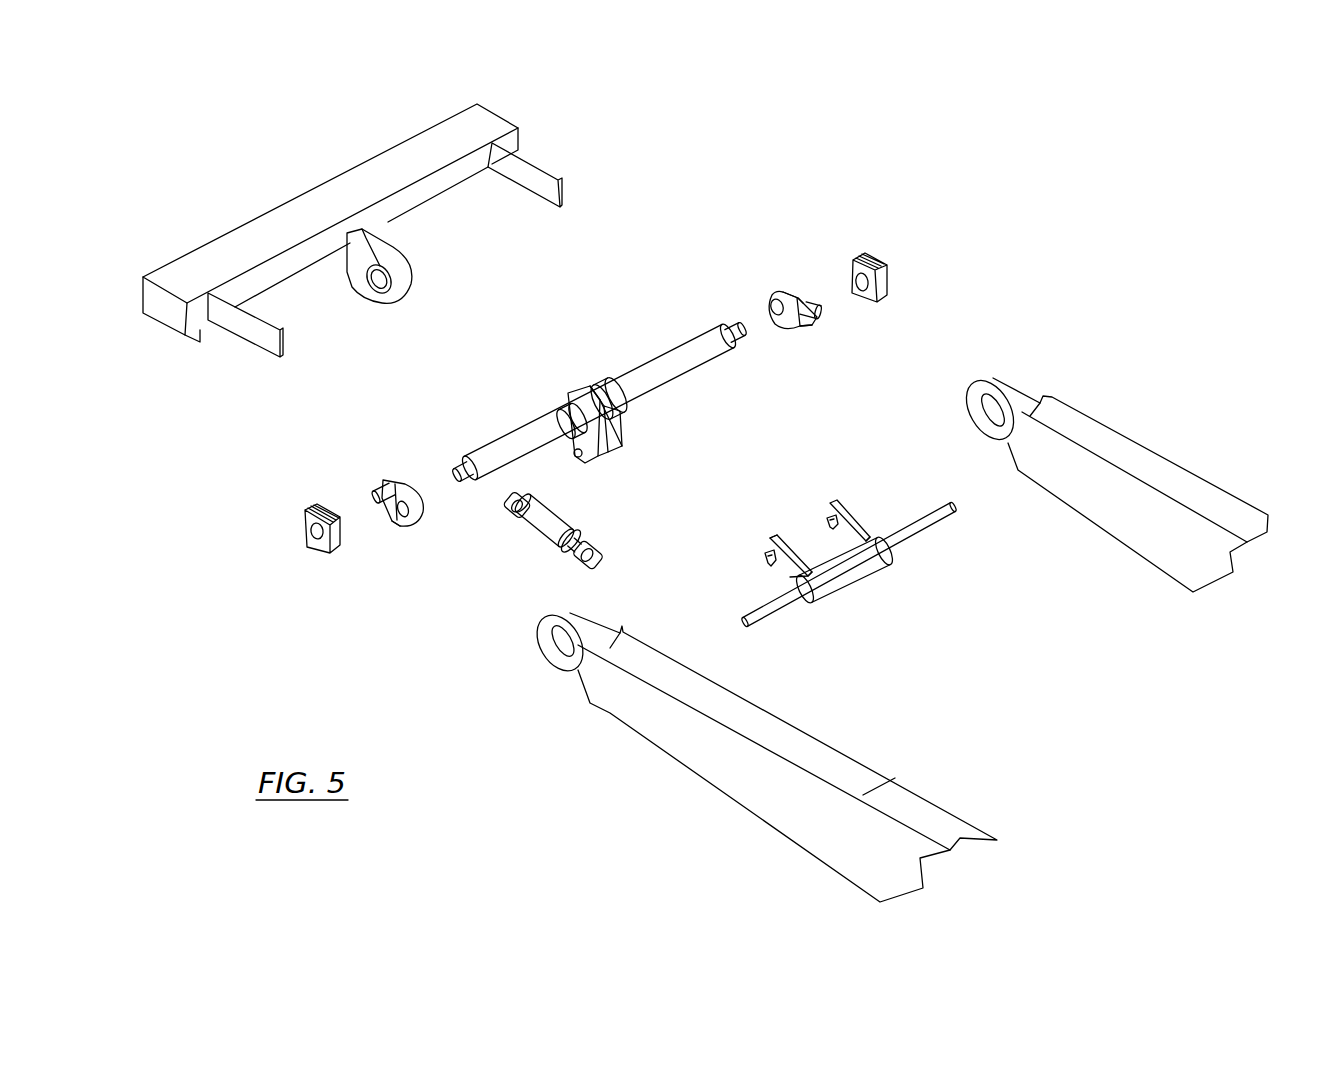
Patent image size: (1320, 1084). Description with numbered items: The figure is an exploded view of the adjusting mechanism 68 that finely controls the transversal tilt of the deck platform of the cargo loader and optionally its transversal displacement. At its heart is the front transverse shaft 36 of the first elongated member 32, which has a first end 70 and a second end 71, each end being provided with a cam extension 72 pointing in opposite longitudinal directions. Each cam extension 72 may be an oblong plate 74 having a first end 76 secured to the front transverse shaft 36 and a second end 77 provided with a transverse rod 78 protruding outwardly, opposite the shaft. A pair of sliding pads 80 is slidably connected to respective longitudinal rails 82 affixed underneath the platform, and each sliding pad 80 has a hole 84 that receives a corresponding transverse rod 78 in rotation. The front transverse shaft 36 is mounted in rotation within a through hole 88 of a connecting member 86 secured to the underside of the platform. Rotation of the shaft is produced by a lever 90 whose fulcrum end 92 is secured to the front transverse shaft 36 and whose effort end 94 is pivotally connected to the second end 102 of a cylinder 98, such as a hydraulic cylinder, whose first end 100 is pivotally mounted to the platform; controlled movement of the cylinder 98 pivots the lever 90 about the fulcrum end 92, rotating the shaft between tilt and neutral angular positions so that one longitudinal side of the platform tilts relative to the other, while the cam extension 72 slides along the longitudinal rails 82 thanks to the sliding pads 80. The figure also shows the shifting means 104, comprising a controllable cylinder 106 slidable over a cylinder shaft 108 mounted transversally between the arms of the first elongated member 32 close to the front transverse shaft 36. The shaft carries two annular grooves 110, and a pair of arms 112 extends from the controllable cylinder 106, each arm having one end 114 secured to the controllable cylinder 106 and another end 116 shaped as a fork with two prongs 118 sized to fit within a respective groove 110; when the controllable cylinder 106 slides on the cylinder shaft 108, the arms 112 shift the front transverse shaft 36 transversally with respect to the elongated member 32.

The first elongated member 32 is at (612, 722).
The front transverse shaft 36 is at (598, 306).
The adjusting mechanism 68 is at (1000, 226).
The first end 70 is at (715, 370).
The second end 71 is at (470, 453).
The cam extension 72 is at (826, 332).
The oblong plate 74 is at (778, 288).
The first end 76 is at (765, 310).
The second end 77 is at (800, 336).
The transverse rod 78 is at (812, 300).
The sliding pad 80 is at (892, 286).
The longitudinal rail 82 is at (530, 158).
The hole 84 is at (866, 290).
The connecting member 86 is at (413, 274).
The through hole 88 is at (381, 288).
The lever 90 is at (628, 445).
The fulcrum end 92 is at (614, 412).
The effort end 94 is at (596, 462).
The cylinder 98 is at (540, 540).
The first end 100 is at (510, 510).
The second end 102 is at (606, 553).
The shifting means 104 is at (825, 646).
The controllable cylinder 106 is at (852, 600).
The cylinder shaft 108 is at (918, 552).
The annular groove 110 is at (616, 376).
The arm 112 is at (862, 515).
The end 114 is at (868, 537).
The other end 116 is at (836, 510).
The prong 118 is at (766, 552).